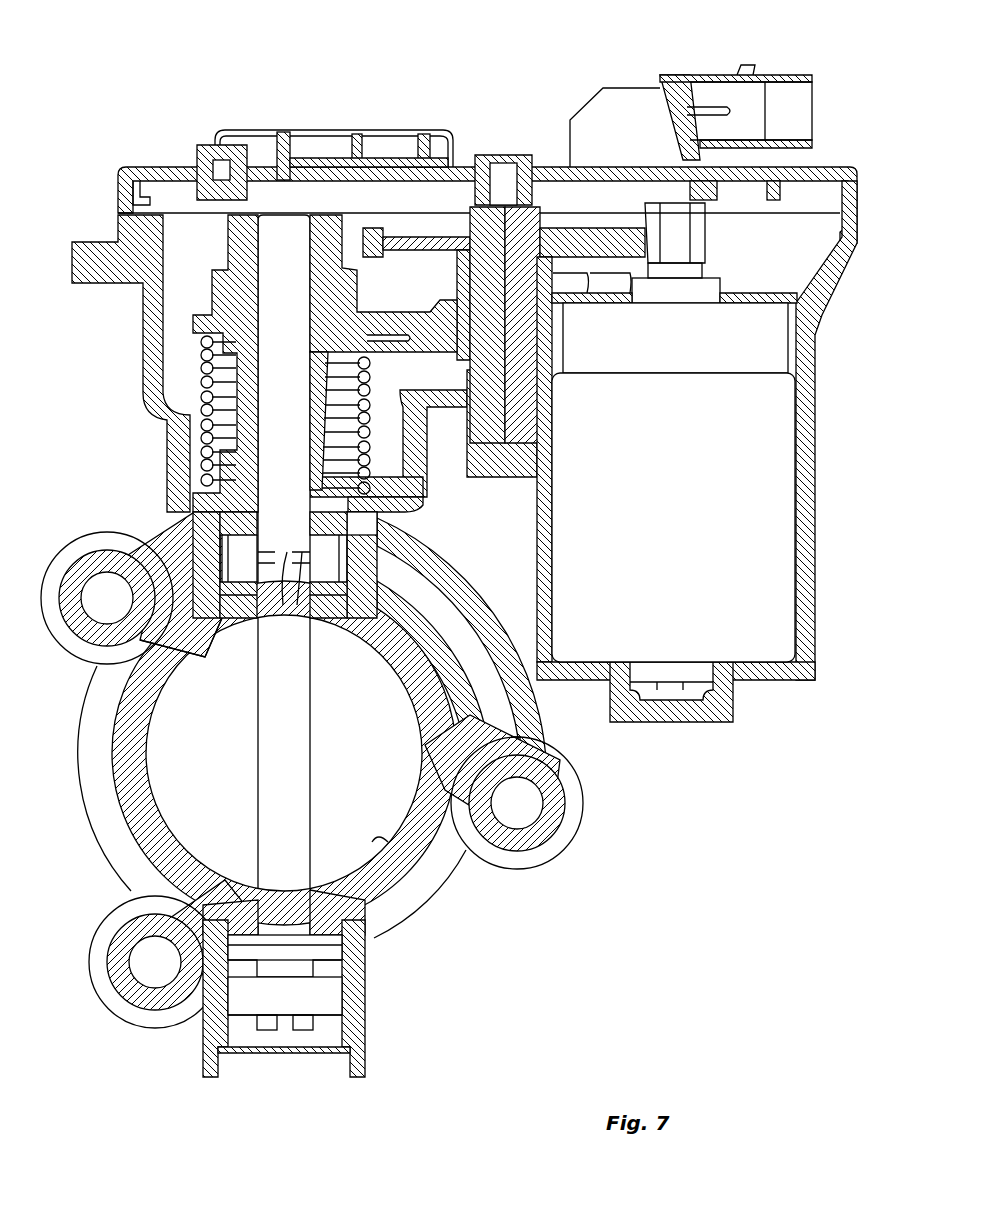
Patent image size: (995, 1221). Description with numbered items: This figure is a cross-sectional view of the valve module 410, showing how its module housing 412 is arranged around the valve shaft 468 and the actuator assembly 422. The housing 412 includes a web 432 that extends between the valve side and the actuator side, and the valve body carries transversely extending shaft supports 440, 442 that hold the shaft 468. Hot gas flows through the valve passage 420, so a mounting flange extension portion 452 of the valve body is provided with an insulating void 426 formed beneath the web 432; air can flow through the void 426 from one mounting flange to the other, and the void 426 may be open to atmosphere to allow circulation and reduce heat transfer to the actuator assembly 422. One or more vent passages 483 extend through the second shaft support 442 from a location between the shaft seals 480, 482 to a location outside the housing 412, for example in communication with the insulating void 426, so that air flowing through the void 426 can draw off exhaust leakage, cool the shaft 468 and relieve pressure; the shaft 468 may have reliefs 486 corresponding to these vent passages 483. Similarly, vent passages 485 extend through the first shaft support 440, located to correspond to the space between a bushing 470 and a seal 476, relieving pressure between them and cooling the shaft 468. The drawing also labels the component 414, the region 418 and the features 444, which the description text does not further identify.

The valve module 410 is at (206, 74).
The module housing 412 is at (188, 512).
The cover 414 is at (461, 158).
The flow passage bore 418 is at (222, 762).
The valve passage 420 is at (386, 852).
The actuator assembly 422 is at (832, 447).
The insulating void 426 is at (530, 714).
The web 432 is at (530, 574).
The first shaft support 440 is at (350, 1012).
The second shaft support 442 is at (216, 556).
The mounting holes 444 is at (127, 609).
The mounting flange extension portion 452 is at (440, 556).
The shaft 468 is at (307, 792).
The bushing 470 is at (254, 1003).
The seal 476 is at (238, 948).
The shaft seal 480 is at (122, 655).
The shaft seal 482 is at (214, 530).
The vent passage 483 is at (385, 530).
The vent passage 485 is at (345, 993).
The relief 486 is at (285, 595).